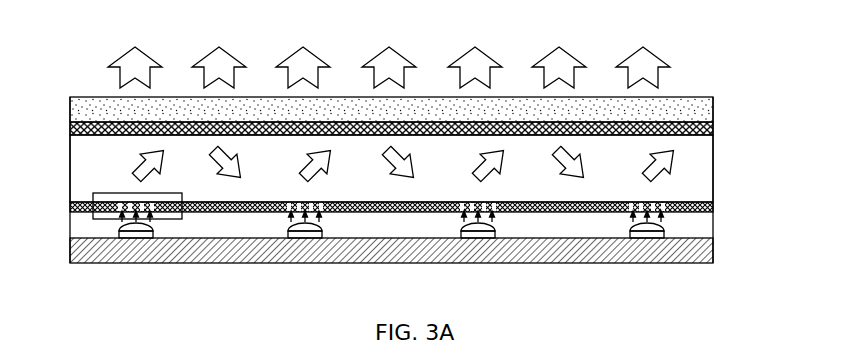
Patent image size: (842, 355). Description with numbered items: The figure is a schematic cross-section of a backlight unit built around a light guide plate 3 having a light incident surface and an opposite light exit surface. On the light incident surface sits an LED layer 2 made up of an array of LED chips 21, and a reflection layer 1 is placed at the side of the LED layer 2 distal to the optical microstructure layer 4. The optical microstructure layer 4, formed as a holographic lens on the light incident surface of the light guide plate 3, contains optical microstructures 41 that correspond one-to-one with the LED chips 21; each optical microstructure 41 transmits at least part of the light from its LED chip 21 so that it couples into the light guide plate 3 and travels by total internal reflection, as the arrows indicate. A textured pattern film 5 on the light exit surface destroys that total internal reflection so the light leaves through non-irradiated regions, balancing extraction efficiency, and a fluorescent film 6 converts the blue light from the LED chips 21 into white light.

The reflection layer 1 is at (700, 253).
The LED layer 2 is at (657, 230).
The LED chip 21 is at (647, 235).
The light guide plate 3 is at (703, 175).
The optical microstructure layer 4 is at (712, 205).
The optical microstructure 41 is at (107, 193).
The textured pattern film 5 is at (703, 130).
The fluorescent film 6 is at (700, 110).